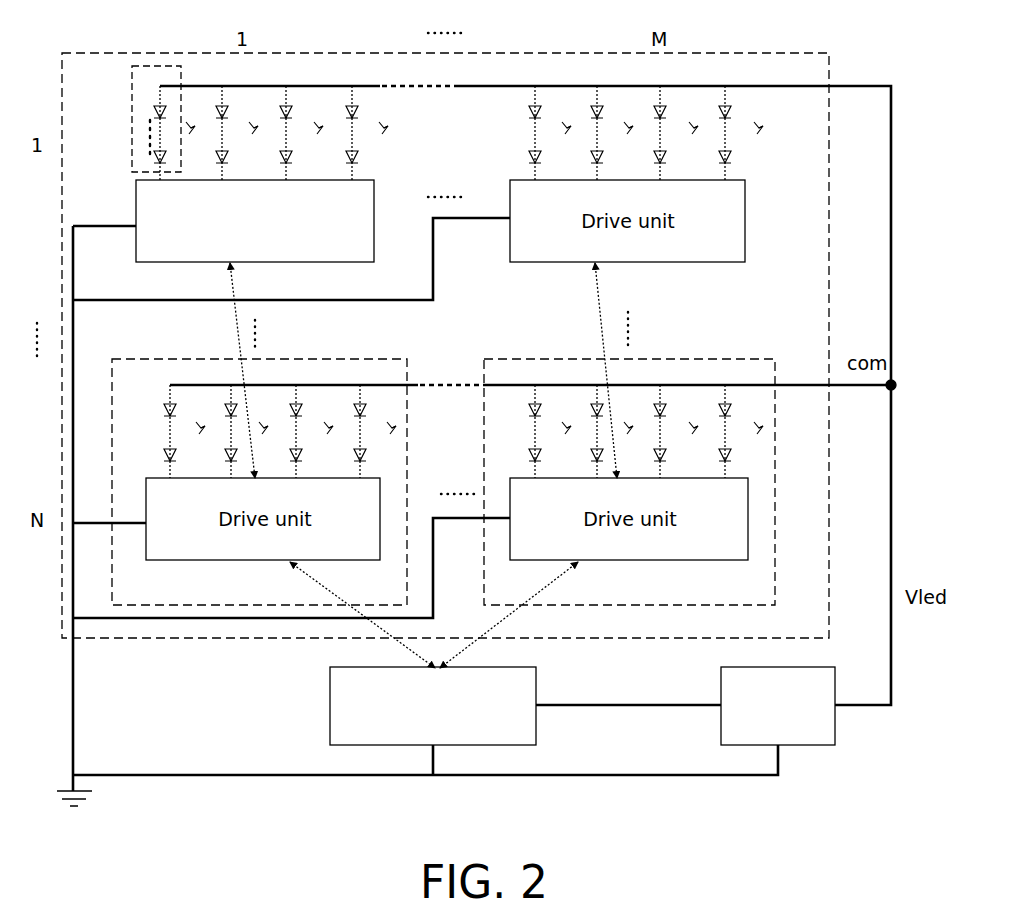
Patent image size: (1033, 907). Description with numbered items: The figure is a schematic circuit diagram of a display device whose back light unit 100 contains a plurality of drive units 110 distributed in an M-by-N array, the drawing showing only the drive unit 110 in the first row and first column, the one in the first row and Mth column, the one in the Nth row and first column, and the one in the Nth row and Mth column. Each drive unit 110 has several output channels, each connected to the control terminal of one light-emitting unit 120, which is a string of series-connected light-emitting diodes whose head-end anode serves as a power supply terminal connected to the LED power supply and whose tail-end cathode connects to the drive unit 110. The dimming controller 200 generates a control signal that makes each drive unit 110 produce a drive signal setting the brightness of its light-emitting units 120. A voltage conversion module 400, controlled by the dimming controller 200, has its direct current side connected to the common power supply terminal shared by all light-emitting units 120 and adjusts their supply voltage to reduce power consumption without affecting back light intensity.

The back light unit 100 is at (500, 53).
The drive unit 110 is at (280, 263).
The light-emitting unit 120 is at (182, 82).
The dimming controller 200 is at (536, 687).
The voltage conversion module 400 is at (835, 735).